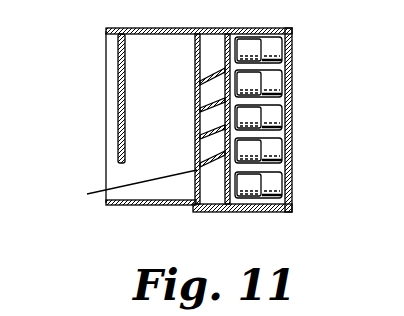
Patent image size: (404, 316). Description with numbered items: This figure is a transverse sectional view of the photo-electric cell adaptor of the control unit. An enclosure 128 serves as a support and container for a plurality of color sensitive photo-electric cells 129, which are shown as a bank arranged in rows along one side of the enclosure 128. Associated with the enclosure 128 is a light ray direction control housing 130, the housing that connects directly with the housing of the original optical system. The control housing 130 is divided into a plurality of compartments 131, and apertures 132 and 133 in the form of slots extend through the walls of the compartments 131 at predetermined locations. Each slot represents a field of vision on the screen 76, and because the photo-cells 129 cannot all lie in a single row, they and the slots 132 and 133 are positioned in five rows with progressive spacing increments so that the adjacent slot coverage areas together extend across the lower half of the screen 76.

The screen 76 is at (118, 61).
The enclosure 128 is at (275, 29).
The color sensitive photo-electric cells 129 is at (250, 82).
The light ray direction control housing 130 is at (120, 206).
The compartments 131 is at (197, 191).
The apertures 132 is at (223, 190).
The apertures 133 is at (123, 189).